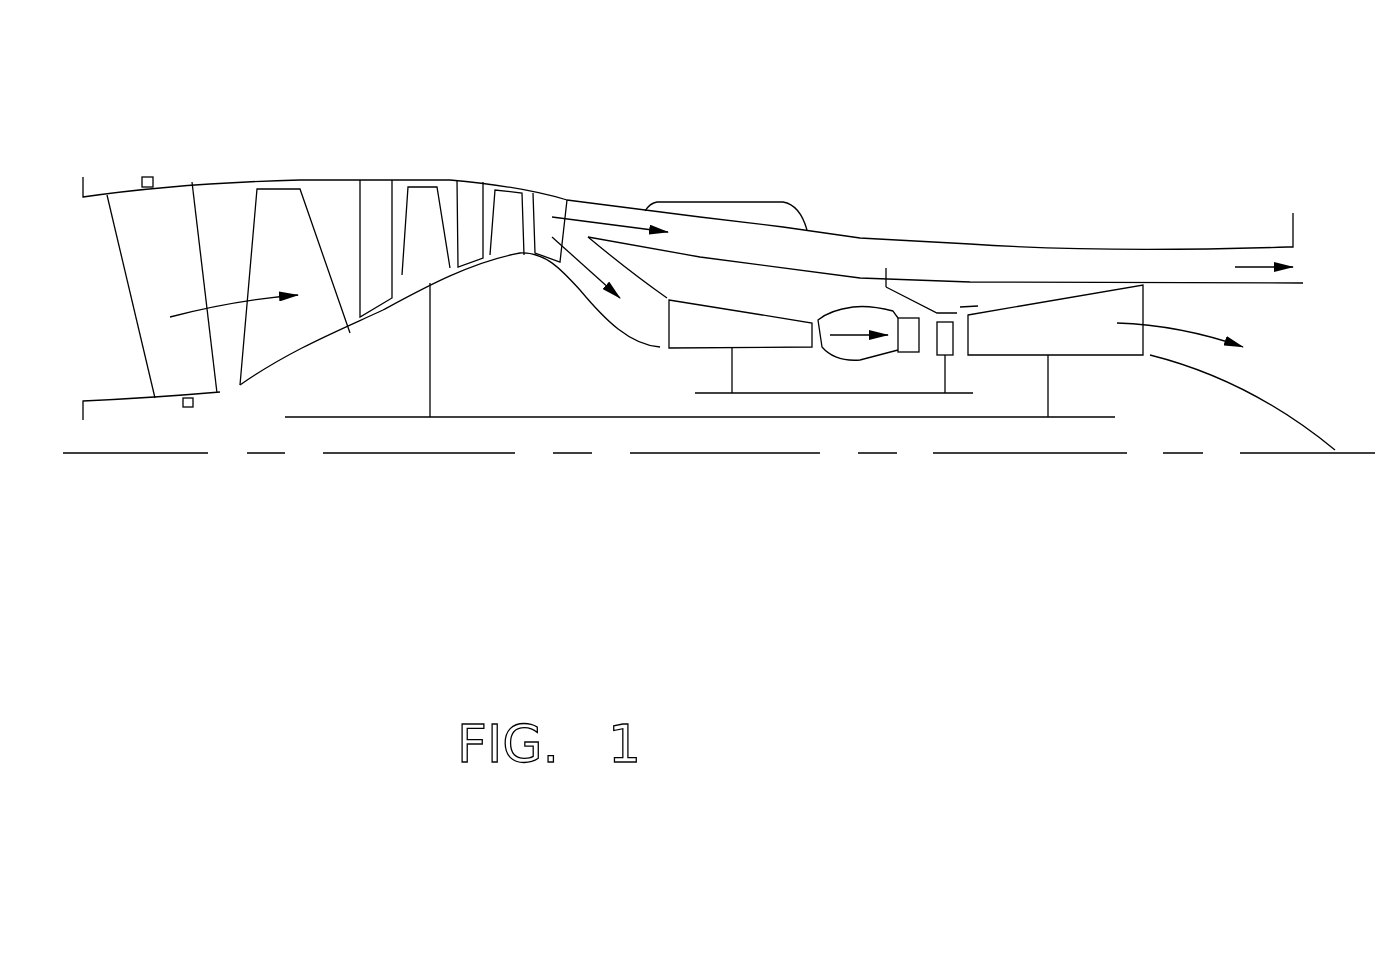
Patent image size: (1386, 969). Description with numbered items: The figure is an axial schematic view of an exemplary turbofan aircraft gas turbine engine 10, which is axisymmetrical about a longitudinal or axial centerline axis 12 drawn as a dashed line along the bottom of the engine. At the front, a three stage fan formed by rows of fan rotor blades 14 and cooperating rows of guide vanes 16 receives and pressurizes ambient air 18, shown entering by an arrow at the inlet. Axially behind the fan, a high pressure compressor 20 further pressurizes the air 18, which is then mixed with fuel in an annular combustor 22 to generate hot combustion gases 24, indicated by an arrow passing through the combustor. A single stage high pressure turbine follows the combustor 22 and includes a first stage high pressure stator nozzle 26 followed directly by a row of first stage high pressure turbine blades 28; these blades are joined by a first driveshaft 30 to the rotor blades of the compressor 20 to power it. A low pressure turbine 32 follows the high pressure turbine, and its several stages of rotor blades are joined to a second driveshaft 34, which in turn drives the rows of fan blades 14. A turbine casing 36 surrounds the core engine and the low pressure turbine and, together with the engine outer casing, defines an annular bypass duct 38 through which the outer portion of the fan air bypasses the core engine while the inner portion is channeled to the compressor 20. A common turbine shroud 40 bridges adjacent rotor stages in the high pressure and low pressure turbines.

The turbofan aircraft gas turbine engine 10 is at (1047, 170).
The longitudinal centerline axis 12 is at (957, 453).
The fan rotor blades 14 is at (306, 268).
The guide vanes 16 is at (176, 257).
The ambient air 18 is at (225, 313).
The high pressure compressor 20 is at (731, 342).
The annular combustor 22 is at (840, 308).
The hot combustion gases 24 is at (843, 335).
The first stage high pressure stator nozzle 26 is at (907, 347).
The first stage high pressure turbine blades 28 is at (955, 343).
The first driveshaft 30 is at (775, 395).
The low pressure turbine 32 is at (1086, 343).
The second driveshaft 34 is at (563, 417).
The turbine casing 36 is at (987, 285).
The annular bypass duct 38 is at (851, 273).
The common turbine shroud 40 is at (918, 290).